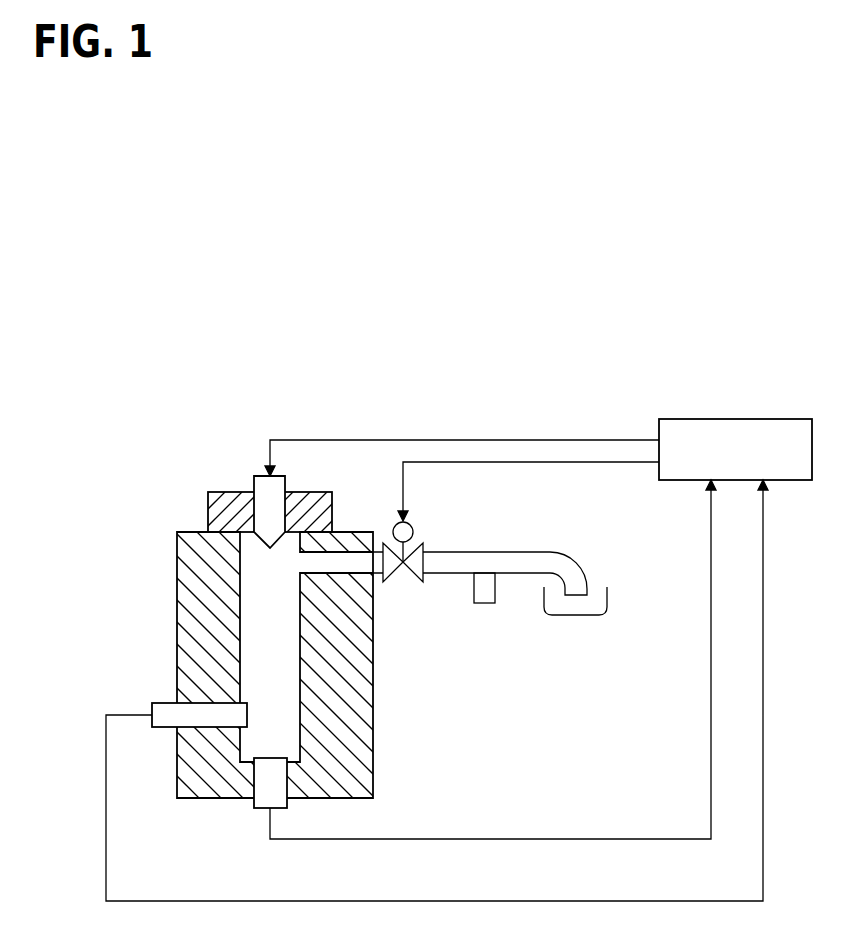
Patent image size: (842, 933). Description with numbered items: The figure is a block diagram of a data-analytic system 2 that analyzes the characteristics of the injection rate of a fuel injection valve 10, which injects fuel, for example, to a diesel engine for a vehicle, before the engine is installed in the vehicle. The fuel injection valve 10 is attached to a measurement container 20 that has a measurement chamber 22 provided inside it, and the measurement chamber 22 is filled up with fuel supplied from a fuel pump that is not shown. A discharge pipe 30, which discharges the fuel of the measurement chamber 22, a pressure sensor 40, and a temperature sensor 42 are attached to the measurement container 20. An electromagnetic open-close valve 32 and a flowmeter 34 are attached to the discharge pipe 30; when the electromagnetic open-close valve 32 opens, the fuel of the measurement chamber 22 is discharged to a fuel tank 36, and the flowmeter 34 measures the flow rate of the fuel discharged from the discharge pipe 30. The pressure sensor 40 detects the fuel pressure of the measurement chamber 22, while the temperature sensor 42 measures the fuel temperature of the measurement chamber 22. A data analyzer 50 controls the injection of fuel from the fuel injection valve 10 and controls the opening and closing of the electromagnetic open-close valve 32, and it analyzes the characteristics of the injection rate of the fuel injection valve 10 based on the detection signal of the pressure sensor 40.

The data-analytic system 2 is at (464, 347).
The fuel injection valve 10 is at (257, 476).
The measurement container 20 is at (177, 576).
The measurement chamber 22 is at (240, 640).
The discharge pipe 30 is at (541, 552).
The electromagnetic open-close valve 32 is at (399, 582).
The flowmeter 34 is at (487, 603).
The fuel tank 36 is at (578, 615).
The pressure sensor 40 is at (257, 809).
The temperature sensor 42 is at (158, 727).
The data analyzer 50 is at (740, 419).